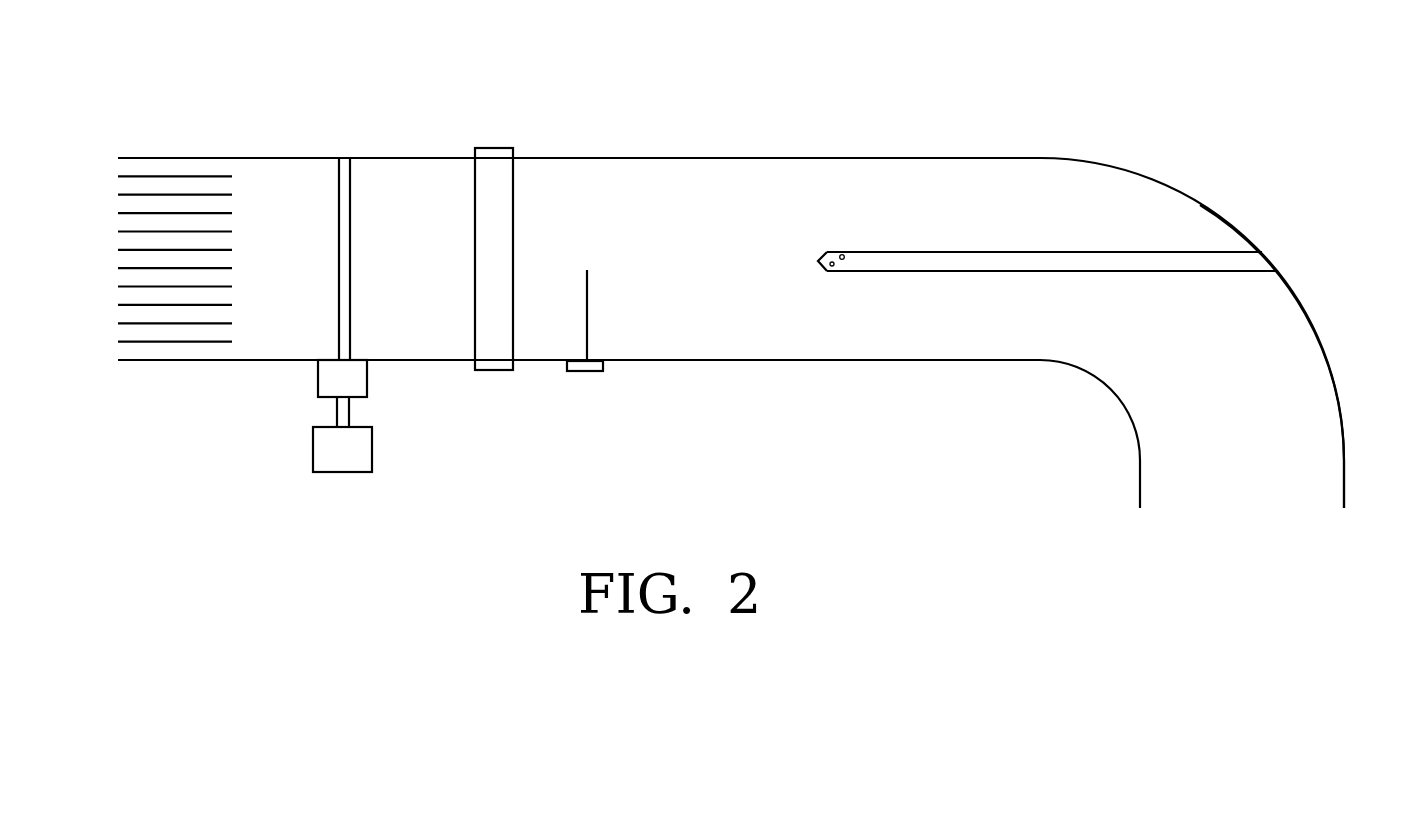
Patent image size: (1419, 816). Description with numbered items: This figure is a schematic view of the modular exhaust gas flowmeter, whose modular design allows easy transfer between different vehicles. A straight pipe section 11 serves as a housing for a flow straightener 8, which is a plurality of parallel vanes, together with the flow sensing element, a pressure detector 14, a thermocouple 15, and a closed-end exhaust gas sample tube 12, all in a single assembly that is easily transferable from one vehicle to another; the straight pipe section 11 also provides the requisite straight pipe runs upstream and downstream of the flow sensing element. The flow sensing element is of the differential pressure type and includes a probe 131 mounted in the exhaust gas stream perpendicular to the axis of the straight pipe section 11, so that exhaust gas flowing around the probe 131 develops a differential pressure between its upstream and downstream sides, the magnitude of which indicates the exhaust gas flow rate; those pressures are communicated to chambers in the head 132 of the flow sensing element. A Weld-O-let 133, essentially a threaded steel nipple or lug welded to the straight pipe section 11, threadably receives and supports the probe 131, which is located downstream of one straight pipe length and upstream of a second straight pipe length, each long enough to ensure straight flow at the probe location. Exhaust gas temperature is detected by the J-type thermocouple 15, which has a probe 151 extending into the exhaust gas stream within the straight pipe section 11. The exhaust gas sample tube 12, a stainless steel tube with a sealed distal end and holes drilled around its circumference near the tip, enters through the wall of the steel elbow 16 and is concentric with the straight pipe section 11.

The flow straightener 8 is at (170, 176).
The straight pipe section 11 is at (780, 158).
The exhaust gas sample tube 12 is at (965, 271).
The pressure detector 14 is at (497, 370).
The thermocouple 15 is at (590, 371).
The probe 151 is at (592, 315).
The steel elbow 16 is at (1310, 315).
The probe 131 is at (339, 200).
The head 132 is at (313, 455).
The Weld-O-let 133 is at (318, 380).